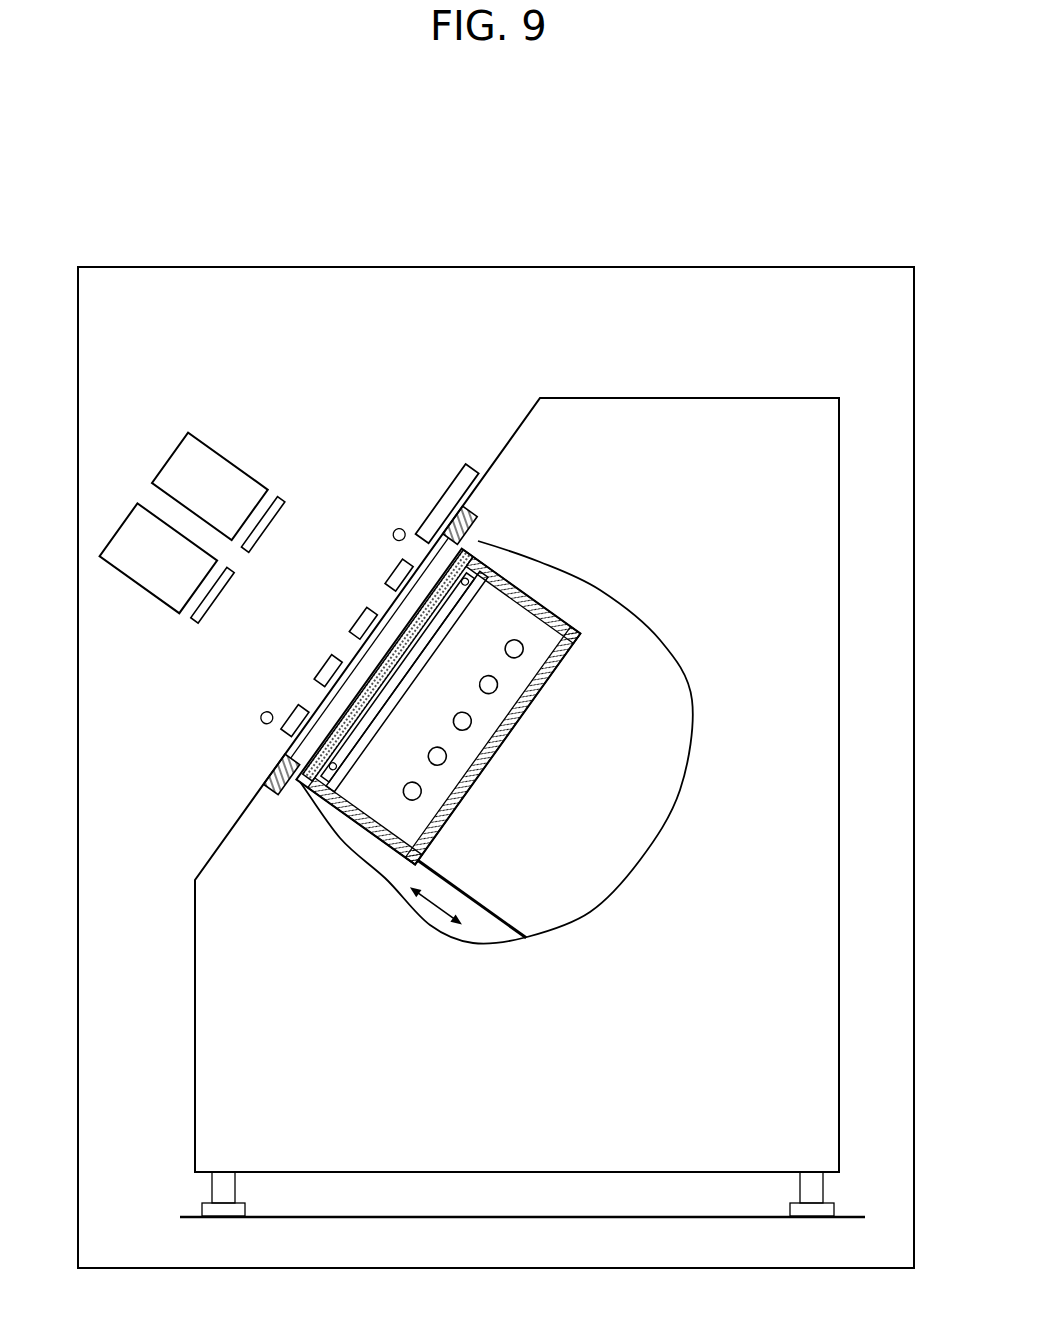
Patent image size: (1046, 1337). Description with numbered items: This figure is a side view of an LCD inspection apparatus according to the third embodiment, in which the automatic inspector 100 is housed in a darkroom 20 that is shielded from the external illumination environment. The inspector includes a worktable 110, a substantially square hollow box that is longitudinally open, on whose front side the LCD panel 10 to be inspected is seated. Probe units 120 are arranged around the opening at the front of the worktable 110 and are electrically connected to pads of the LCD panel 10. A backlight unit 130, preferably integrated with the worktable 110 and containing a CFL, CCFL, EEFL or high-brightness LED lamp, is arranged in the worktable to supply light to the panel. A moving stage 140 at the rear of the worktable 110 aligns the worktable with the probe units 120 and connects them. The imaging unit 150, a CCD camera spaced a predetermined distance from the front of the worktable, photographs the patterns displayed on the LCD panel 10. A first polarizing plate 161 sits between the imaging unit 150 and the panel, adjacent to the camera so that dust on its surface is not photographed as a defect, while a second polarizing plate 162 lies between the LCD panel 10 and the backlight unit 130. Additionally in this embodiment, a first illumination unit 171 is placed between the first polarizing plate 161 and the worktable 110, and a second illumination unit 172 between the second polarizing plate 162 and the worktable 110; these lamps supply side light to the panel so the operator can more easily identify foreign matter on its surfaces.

The darkroom 20 is at (598, 267).
The automatic inspector 100 is at (692, 396).
The imaging unit 150 is at (130, 530).
The first polarizing plate 161 is at (262, 527).
The probe units 120 is at (447, 508).
The first illumination unit 171 is at (393, 530).
The LCD panel 10 is at (440, 575).
The worktable 110 is at (542, 600).
The second polarizing plate 162 is at (393, 812).
The second illumination unit 172 is at (328, 764).
The backlight unit 130 is at (373, 827).
The moving stage 140 is at (600, 840).